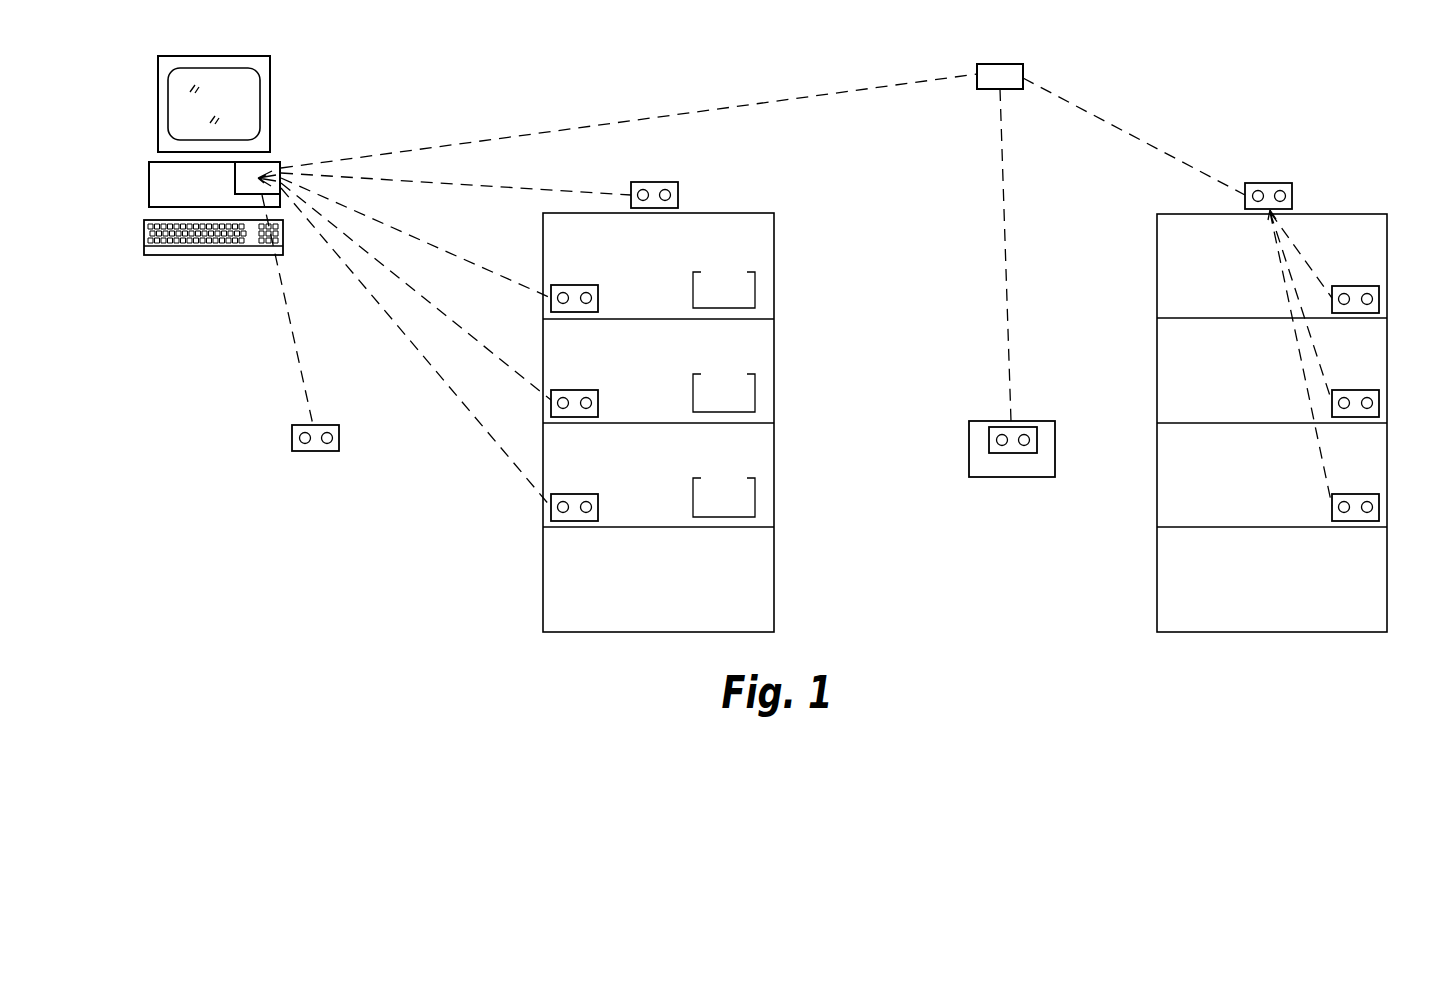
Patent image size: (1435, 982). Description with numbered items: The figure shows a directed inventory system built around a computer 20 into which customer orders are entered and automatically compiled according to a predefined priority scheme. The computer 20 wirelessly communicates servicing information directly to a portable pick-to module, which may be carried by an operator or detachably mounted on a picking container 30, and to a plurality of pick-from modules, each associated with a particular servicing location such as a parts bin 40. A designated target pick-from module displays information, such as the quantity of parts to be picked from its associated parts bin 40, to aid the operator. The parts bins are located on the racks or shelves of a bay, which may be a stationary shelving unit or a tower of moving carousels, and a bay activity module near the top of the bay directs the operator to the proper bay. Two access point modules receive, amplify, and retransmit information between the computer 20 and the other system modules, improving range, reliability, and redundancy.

The computer 20 is at (150, 173).
The picking container 30 is at (1018, 477).
The parts bin 40 is at (752, 286).